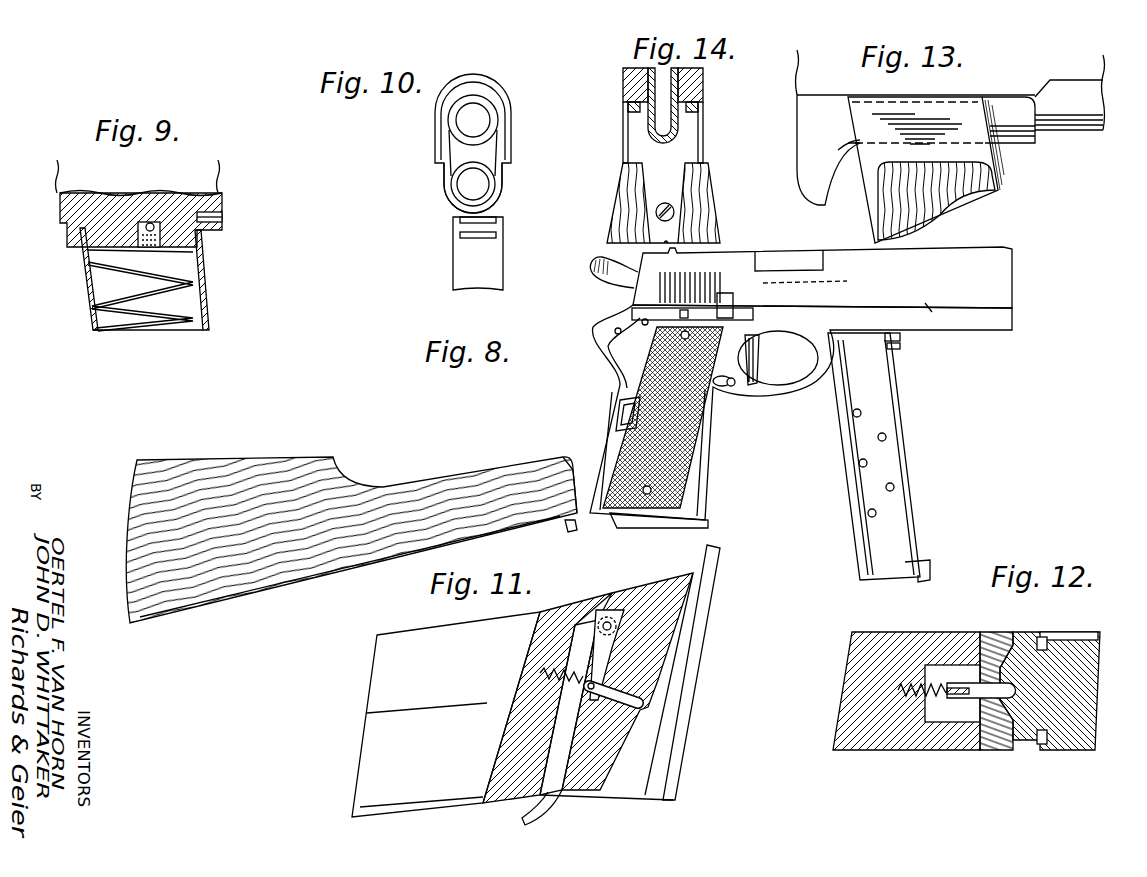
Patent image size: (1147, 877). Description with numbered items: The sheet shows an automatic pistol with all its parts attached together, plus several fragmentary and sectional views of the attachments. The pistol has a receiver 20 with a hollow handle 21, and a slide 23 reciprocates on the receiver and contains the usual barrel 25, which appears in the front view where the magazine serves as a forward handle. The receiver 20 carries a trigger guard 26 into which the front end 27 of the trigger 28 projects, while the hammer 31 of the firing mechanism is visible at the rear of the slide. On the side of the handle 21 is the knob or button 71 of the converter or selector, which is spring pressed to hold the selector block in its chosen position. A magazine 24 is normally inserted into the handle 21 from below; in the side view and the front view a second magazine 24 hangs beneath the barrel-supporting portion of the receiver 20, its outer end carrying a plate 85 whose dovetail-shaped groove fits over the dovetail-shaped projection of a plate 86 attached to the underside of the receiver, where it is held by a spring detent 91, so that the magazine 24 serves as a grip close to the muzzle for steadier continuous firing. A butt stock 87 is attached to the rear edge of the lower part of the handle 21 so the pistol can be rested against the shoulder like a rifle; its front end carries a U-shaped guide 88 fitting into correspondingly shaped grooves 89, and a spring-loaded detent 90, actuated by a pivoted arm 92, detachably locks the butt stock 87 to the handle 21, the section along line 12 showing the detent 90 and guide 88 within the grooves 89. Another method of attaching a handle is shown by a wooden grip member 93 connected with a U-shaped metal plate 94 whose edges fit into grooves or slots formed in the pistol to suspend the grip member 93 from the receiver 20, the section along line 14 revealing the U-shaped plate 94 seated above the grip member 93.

In FIG. 8, the receiver 20 is at (708, 462).
In FIG. 9, the receiver 20 is at (222, 197).
In FIG. 10, the receiver 20 is at (512, 160).
In FIG. 14, the receiver 20 is at (625, 126).
In FIG. 13, the receiver 20 is at (817, 137).
In FIG. 8, the hollow handle 21 is at (708, 499).
In FIG. 11, the hollow handle 21 is at (678, 701).
In FIG. 12, the hollow handle 21 is at (1097, 671).
In FIG. 8, the slide 23 is at (842, 258).
In FIG. 10, the slide 23 is at (435, 131).
In FIG. 14, the slide 23 is at (703, 91).
In FIG. 13, the slide 23 is at (845, 248).
In FIG. 8, the magazine 24 is at (900, 518).
In FIG. 10, the magazine 24 is at (505, 268).
In FIG. 10, the barrel 25 is at (488, 108).
In FIG. 8, the trigger guard 26 is at (815, 392).
In FIG. 8, the front end of the trigger 27 is at (775, 382).
In FIG. 8, the trigger 28 is at (755, 386).
In FIG. 8, the hammer 31 is at (615, 273).
In FIG. 8, the knob or button 71 is at (620, 401).
In FIG. 8, the plate 85 is at (900, 348).
In FIG. 10, the plate 85 is at (455, 230).
In FIG. 8, the plate 86 is at (905, 336).
In FIG. 9, the plate 86 is at (222, 217).
In FIG. 10, the plate 86 is at (500, 223).
In FIG. 8, the butt stock 87 is at (437, 487).
In FIG. 11, the butt stock 87 is at (620, 591).
In FIG. 12, the butt stock 87 is at (925, 640).
In FIG. 8, the U-shaped guide 88 is at (582, 453).
In FIG. 11, the U-shaped guide 88 is at (665, 613).
In FIG. 12, the U-shaped guide 88 is at (1000, 640).
In FIG. 12, the grooves 89 is at (1047, 638).
In FIG. 11, the spring-loaded detent 90 is at (640, 702).
In FIG. 12, the spring-loaded detent 90 is at (990, 750).
In FIG. 9, the spring detent 91 is at (200, 244).
In FIG. 8, the pivoted arm 92 is at (572, 528).
In FIG. 11, the pivoted arm 92 is at (560, 746).
In FIG. 14, the wooden grip member 93 is at (708, 186).
In FIG. 13, the wooden grip member 93 is at (930, 207).
In FIG. 14, the U-shaped metal plate 94 is at (690, 143).
In FIG. 13, the U-shaped metal plate 94 is at (993, 158).
In FIG. 11, the section line 12— 12 is at (520, 673).
In FIG. 13, the section line 14— 14 is at (992, 212).